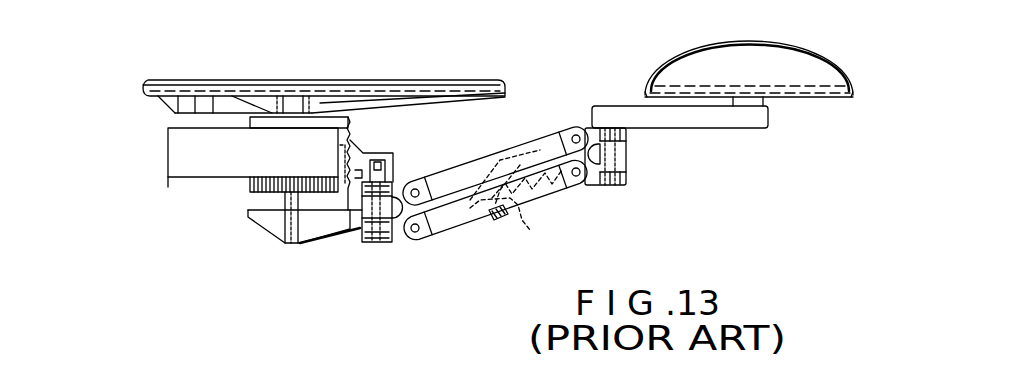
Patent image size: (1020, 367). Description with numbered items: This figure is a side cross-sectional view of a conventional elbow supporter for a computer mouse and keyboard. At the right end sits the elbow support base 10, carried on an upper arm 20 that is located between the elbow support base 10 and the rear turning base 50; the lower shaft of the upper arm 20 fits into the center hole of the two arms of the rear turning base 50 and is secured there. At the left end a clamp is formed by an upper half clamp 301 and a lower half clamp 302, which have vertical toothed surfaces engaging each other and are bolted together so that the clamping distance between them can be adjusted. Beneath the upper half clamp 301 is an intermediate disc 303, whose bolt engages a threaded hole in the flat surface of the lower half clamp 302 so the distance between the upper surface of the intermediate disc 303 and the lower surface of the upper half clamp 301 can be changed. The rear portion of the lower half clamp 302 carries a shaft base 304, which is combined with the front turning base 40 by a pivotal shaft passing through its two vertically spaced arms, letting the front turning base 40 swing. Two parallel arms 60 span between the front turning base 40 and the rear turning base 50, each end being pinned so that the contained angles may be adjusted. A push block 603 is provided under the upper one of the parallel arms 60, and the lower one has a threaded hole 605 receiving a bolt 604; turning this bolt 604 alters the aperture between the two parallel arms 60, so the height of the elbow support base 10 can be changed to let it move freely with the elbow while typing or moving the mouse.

The elbow support base 10 is at (800, 52).
The upper arm 20 is at (709, 128).
The front turning base 40 is at (393, 248).
The rear turning base 50 is at (630, 152).
The parallel arms 60 is at (490, 158).
The upper half clamp 301 is at (356, 122).
The lower half clamp 302 is at (268, 232).
The intermediate disc 303 is at (250, 185).
The shaft base 304 is at (386, 160).
The push block 603 is at (548, 170).
The bolt 604 is at (499, 221).
The threaded hole 605 is at (524, 222).